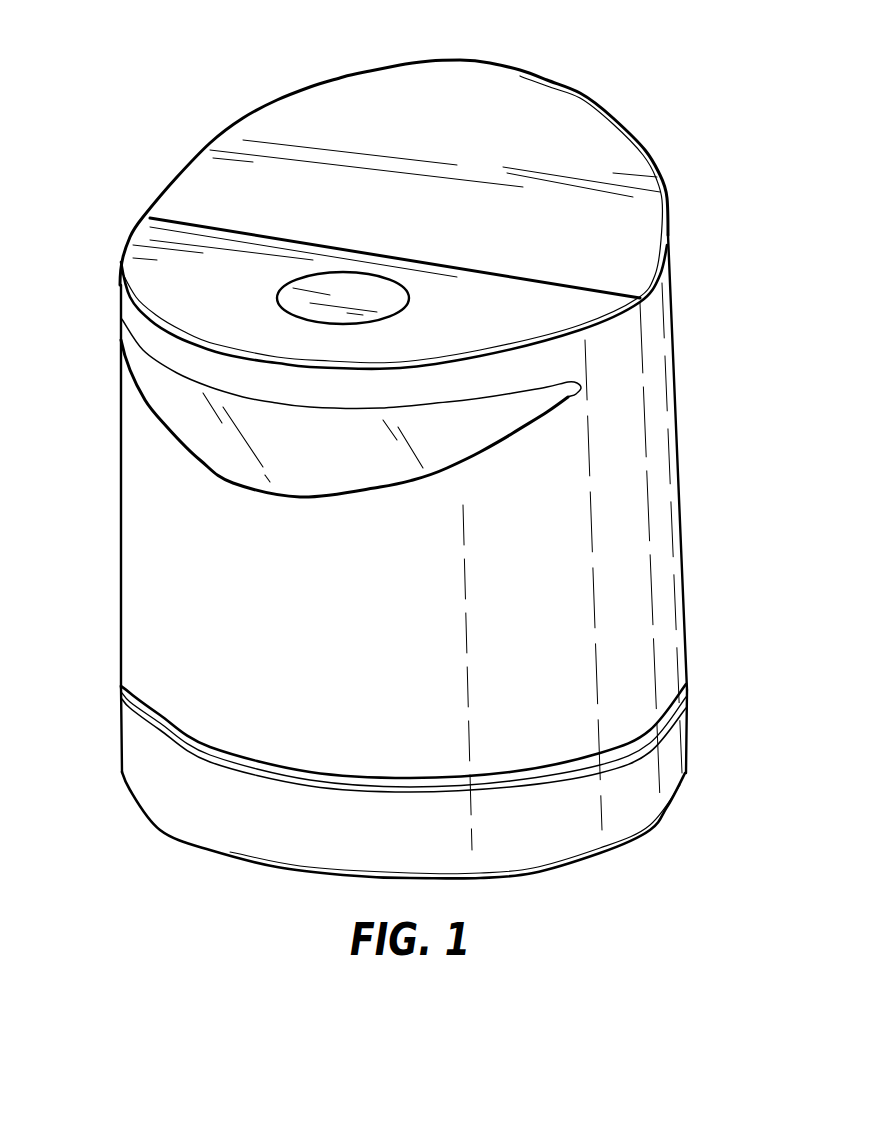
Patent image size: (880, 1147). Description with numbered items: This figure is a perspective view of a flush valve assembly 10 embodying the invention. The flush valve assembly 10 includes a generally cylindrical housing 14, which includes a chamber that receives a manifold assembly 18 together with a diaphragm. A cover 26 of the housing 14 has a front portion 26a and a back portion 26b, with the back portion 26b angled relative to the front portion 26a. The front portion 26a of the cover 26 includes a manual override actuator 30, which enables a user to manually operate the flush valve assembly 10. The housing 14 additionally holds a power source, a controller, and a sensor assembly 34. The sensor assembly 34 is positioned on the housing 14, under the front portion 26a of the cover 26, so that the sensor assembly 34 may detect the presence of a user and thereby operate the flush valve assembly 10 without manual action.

The flush valve assembly 10 is at (707, 53).
The housing 14 is at (157, 563).
The manifold assembly 18 is at (155, 788).
The cover 26 is at (310, 78).
The front portion 26a is at (173, 275).
The back portion 26b is at (382, 100).
The manual override actuator 30 is at (337, 293).
The sensor assembly 34 is at (192, 408).